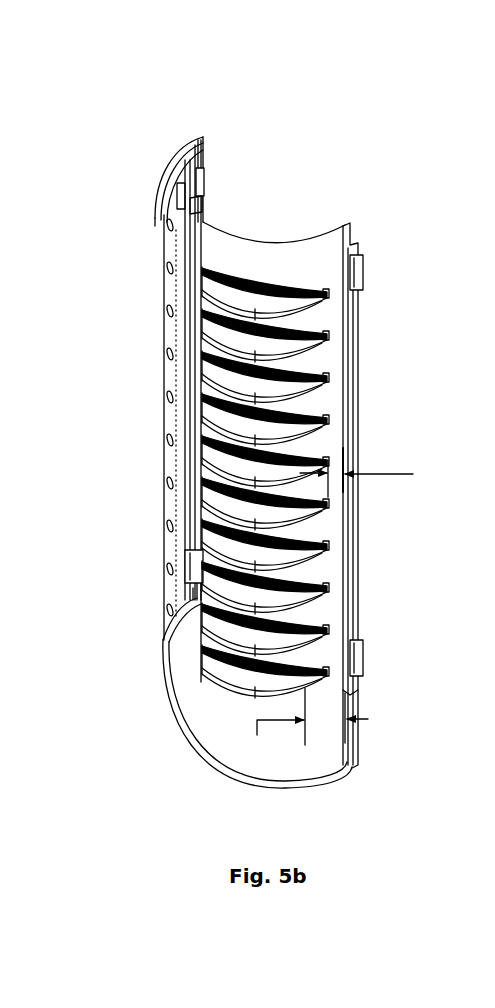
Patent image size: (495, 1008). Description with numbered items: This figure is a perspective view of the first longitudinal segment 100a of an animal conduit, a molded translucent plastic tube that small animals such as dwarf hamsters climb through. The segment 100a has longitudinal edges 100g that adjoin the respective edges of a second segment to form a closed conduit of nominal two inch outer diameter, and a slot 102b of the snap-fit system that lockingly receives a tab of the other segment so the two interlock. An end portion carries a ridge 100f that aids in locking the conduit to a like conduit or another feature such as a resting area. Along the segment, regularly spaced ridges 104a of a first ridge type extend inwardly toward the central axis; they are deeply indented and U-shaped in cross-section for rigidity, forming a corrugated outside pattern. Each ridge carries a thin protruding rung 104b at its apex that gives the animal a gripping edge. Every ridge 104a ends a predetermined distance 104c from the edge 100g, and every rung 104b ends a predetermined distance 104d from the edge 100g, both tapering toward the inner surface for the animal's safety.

The first longitudinal segment 100a is at (338, 156).
The ridge 100f is at (199, 140).
The longitudinal edge 100g is at (190, 392).
The slot 102b is at (192, 188).
The ridge of a first ridge type 104a is at (333, 440).
The protruding rung 104b is at (284, 334).
The predetermined distance 104c is at (298, 723).
The predetermined distance 104d is at (382, 472).